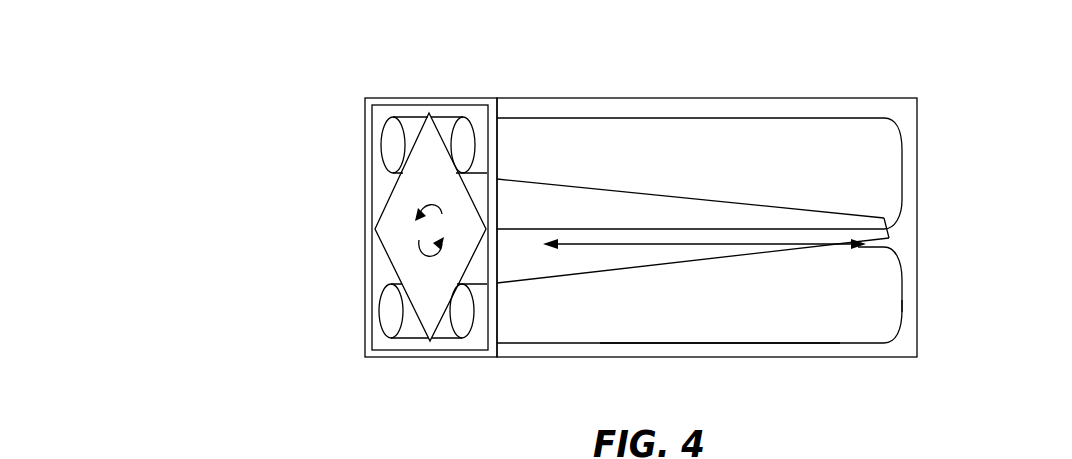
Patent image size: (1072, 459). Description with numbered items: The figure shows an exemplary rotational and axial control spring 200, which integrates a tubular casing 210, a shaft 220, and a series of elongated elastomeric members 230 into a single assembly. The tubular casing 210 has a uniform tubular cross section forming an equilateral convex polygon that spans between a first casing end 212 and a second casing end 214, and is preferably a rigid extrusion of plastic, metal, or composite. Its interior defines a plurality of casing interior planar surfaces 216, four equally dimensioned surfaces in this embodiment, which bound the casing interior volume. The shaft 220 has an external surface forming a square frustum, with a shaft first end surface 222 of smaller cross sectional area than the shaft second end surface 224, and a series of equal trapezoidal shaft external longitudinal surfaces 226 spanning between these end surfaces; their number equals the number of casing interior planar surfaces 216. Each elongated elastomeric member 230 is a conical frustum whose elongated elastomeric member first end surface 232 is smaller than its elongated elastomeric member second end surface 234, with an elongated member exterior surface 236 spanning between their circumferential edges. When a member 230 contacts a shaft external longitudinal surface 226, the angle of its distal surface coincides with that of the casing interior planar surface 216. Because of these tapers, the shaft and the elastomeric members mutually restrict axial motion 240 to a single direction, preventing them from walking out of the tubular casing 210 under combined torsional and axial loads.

The rotational and axial control spring 200 is at (243, 96).
The tubular casing 210 is at (707, 98).
The first casing end 212 is at (345, 108).
The second casing end 214 is at (948, 102).
The casing interior planar surfaces 216 is at (377, 278).
The shaft 220 is at (889, 242).
The shaft first end surface 222 is at (401, 236).
The shaft second end surface 224 is at (888, 222).
The shaft external longitudinal surfaces 226 is at (525, 264).
The elongated elastomeric members 230 is at (865, 172).
The elongated elastomeric member first end surface 232 is at (393, 154).
The elongated elastomeric member second end surface 234 is at (900, 317).
The elongated member exterior surface 236 is at (803, 307).
The axial motion 240 is at (705, 245).